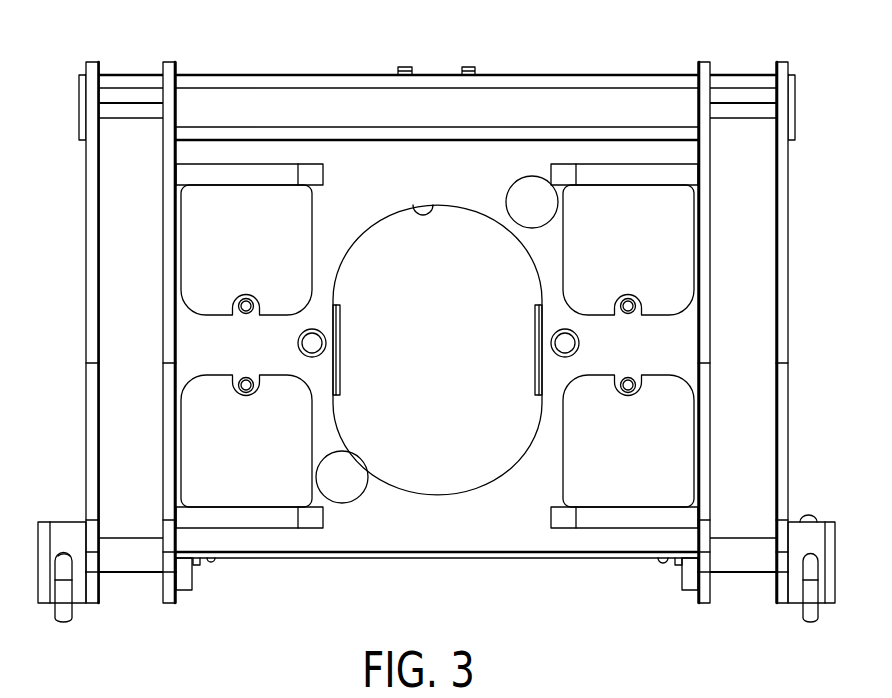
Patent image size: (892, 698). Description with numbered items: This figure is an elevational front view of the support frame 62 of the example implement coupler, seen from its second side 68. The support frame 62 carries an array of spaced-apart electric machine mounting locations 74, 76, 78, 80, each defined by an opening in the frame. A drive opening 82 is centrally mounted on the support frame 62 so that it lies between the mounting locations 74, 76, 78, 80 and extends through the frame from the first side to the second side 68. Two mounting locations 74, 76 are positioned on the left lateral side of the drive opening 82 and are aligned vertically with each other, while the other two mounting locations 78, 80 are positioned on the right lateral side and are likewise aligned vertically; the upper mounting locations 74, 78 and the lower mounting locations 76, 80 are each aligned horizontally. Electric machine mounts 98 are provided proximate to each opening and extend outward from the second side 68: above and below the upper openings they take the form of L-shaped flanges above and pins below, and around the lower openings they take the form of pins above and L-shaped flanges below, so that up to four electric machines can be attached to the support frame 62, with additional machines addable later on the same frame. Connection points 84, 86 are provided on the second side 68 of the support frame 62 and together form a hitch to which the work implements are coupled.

The support frame 62 is at (219, 68).
The second side 68 is at (487, 528).
The first electric machine mounting location 74 is at (166, 260).
The second electric machine mounting location 76 is at (172, 456).
The third electric machine mounting location 78 is at (711, 237).
The fourth electric machine mounting location 80 is at (711, 421).
The drive opening 82 is at (410, 208).
The connection point 84 is at (143, 562).
The connection point 86 is at (738, 560).
The electric machine mount 98 is at (267, 172).